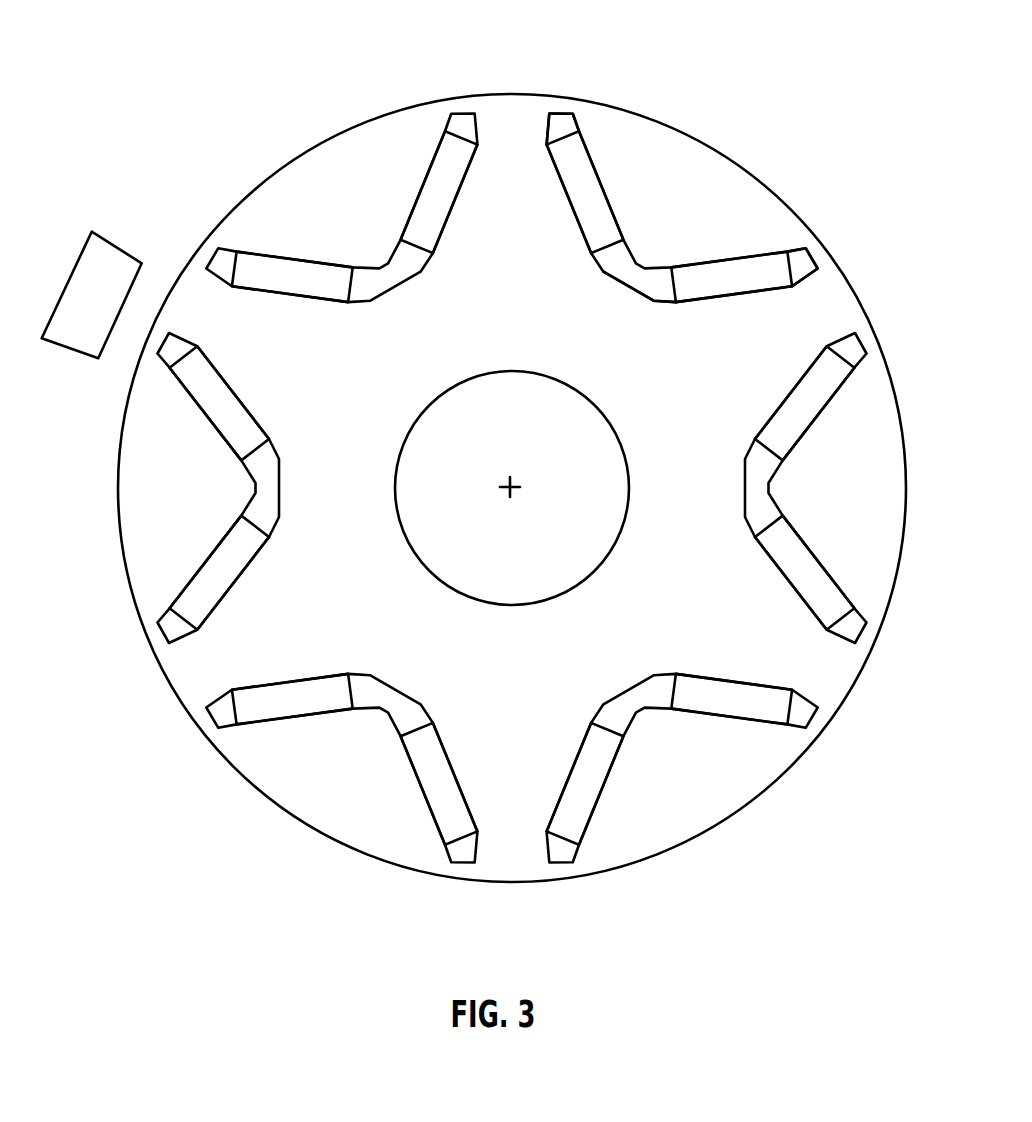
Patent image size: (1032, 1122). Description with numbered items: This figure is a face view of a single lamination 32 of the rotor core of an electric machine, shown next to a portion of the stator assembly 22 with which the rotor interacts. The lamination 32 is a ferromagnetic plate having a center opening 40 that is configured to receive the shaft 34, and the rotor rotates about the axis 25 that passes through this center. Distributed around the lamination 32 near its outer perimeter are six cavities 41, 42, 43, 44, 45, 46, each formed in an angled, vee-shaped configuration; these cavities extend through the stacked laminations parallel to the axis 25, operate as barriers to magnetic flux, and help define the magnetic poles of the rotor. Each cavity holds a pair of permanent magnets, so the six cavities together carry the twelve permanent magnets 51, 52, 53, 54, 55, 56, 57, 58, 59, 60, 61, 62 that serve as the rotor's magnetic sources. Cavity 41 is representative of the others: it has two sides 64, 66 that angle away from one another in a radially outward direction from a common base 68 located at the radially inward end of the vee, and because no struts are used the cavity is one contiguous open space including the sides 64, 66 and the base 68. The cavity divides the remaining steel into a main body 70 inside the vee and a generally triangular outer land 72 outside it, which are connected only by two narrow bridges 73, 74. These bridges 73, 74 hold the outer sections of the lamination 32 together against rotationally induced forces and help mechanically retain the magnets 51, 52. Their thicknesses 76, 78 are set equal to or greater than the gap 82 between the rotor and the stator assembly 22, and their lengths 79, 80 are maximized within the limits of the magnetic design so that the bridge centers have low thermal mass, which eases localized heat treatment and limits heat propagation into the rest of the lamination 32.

The stator assembly 22 is at (76, 316).
The axis 25 is at (520, 486).
The lamination 32 is at (152, 184).
The shaft 34 is at (120, 448).
The center opening 40 is at (434, 565).
The cavity 41 is at (620, 263).
The cavity 42 is at (757, 504).
The cavity 43 is at (642, 701).
The cavity 44 is at (395, 702).
The cavity 45 is at (268, 488).
The cavity 46 is at (387, 280).
The permanent magnet 51 is at (596, 190).
The permanent magnet 52 is at (736, 290).
The permanent magnet 53 is at (795, 401).
The permanent magnet 54 is at (806, 556).
The permanent magnet 55 is at (728, 690).
The permanent magnet 56 is at (598, 786).
The permanent magnet 57 is at (425, 789).
The permanent magnet 58 is at (293, 716).
The permanent magnet 59 is at (230, 583).
The permanent magnet 60 is at (214, 419).
The permanent magnet 61 is at (290, 292).
The permanent magnet 62 is at (437, 181).
The side 64 is at (556, 152).
The side 66 is at (808, 258).
The base 68 is at (651, 292).
The main body 70 is at (391, 364).
The outer land 72 is at (742, 170).
The bridge 73 is at (555, 110).
The bridge 74 is at (812, 251).
The thickness 76 is at (570, 60).
The thickness 78 is at (836, 254).
The length 79 is at (528, 79).
The length 80 is at (806, 208).
The gap 82 is at (119, 333).